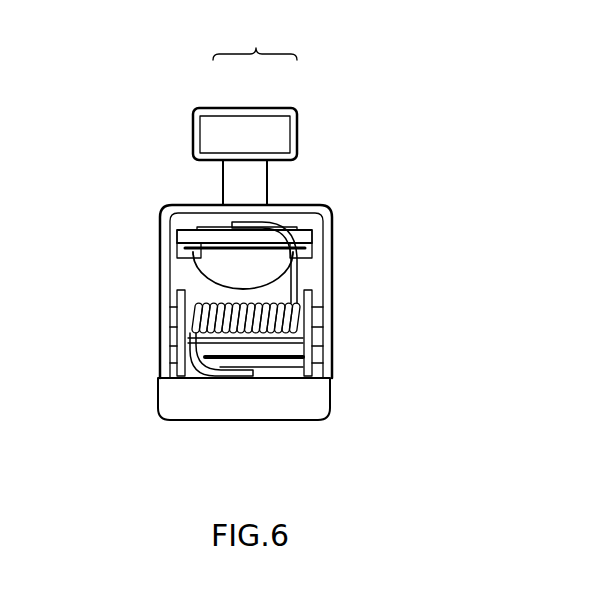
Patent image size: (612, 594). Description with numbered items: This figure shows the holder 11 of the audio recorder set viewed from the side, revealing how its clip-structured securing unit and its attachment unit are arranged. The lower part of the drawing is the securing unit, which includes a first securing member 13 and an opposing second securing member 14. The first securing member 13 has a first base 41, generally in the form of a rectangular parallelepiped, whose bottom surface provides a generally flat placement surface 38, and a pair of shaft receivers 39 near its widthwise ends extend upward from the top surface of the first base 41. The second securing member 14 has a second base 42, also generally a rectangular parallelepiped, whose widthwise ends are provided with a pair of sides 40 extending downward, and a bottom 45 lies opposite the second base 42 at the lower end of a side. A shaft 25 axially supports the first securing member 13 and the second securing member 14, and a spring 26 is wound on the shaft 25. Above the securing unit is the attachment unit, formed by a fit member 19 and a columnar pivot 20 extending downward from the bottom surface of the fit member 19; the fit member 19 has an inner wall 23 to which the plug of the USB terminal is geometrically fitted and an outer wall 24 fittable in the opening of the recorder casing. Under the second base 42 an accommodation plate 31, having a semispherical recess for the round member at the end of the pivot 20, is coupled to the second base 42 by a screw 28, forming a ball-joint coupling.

The holder 11 is at (375, 106).
The first securing member 13 is at (331, 393).
The second securing member 14 is at (332, 245).
The fit member 19 is at (255, 40).
The pivot 20 is at (268, 180).
The inner wall 23 is at (234, 108).
The outer wall 24 is at (284, 108).
The shaft 25 is at (175, 333).
The spring 26 is at (197, 290).
The screw 28 is at (178, 250).
The accommodation plate 31 is at (305, 232).
The placement surface 38 is at (288, 436).
The shaft receivers 39 is at (173, 360).
The sides 40 is at (163, 305).
The first base 41 is at (203, 403).
The second base 42 is at (185, 212).
The bottom 45 is at (318, 348).